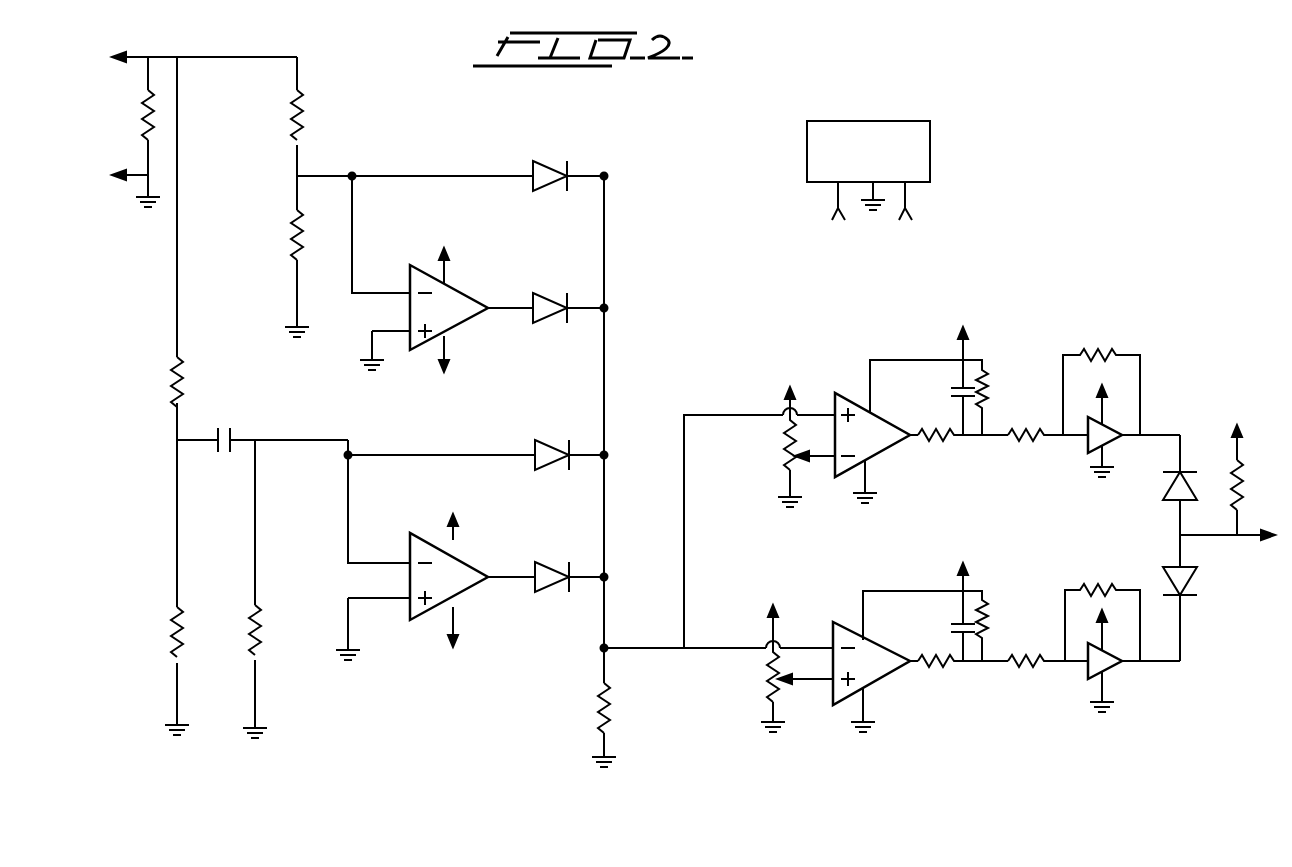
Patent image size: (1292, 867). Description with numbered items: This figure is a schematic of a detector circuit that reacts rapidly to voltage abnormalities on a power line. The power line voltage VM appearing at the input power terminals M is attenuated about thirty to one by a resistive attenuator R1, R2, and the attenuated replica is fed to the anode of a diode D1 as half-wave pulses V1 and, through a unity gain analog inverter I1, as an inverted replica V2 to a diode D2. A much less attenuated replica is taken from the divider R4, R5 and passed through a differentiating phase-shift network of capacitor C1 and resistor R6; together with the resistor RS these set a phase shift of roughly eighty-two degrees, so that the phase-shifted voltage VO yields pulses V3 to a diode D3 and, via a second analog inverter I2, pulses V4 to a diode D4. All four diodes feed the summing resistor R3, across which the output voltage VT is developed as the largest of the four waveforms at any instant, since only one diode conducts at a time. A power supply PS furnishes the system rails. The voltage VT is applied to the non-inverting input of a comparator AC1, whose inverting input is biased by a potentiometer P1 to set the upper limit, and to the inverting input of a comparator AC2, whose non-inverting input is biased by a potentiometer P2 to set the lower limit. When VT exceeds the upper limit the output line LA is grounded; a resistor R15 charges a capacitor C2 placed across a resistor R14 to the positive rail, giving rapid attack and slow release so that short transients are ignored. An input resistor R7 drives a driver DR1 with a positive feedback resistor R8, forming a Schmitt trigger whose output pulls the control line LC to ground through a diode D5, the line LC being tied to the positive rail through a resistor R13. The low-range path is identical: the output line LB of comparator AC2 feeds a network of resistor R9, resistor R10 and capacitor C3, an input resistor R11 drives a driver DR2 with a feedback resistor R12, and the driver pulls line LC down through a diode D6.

The input power terminal M is at (116, 116).
The power line voltage VM is at (192, 57).
The resistor RS is at (142, 123).
The attenuator resistor R1 is at (294, 115).
The attenuator resistor R2 is at (291, 235).
The attenuator resistor R4 is at (170, 393).
The attenuator resistor R5 is at (158, 632).
The resistor R6 is at (270, 635).
The capacitor C1 is at (218, 438).
The phase-shifted voltage VO is at (285, 440).
The analog inverter I1 is at (415, 267).
The half-wave voltage pulses V1 is at (478, 176).
The diode D1 is at (570, 157).
The inverted voltage pulses V2 is at (498, 308).
The diode D2 is at (570, 291).
The analog inverter I2 is at (415, 544).
The phase-shifted voltage pulses V3 is at (500, 455).
The diode D3 is at (571, 439).
The inverted phase-shifted pulses V4 is at (506, 577).
The diode D4 is at (571, 566).
The output voltage VT is at (607, 645).
The summing resistor R3 is at (627, 725).
The power supply PS is at (900, 121).
The potentiometer P1 is at (795, 432).
The comparator AC1 is at (850, 404).
The output line LA is at (910, 438).
The resistor R15 is at (963, 455).
The input resistor R7 is at (1047, 455).
The capacitor C2 is at (948, 367).
The resistor R14 is at (952, 397).
The positive feedback resistor R8 is at (1101, 374).
The driver DR1 is at (1134, 421).
The diode D5 is at (1195, 485).
The control line LC is at (1203, 533).
The pull-up resistor R13 is at (1253, 466).
The diode D6 is at (1195, 598).
The potentiometer P2 is at (786, 655).
The comparator AC2 is at (848, 626).
The output line LB is at (910, 668).
The resistor R9 is at (963, 681).
The input resistor R11 is at (1047, 681).
The capacitor C3 is at (948, 598).
The resistor R10 is at (948, 626).
The positive feedback resistor R12 is at (1102, 597).
The driver DR2 is at (1134, 651).